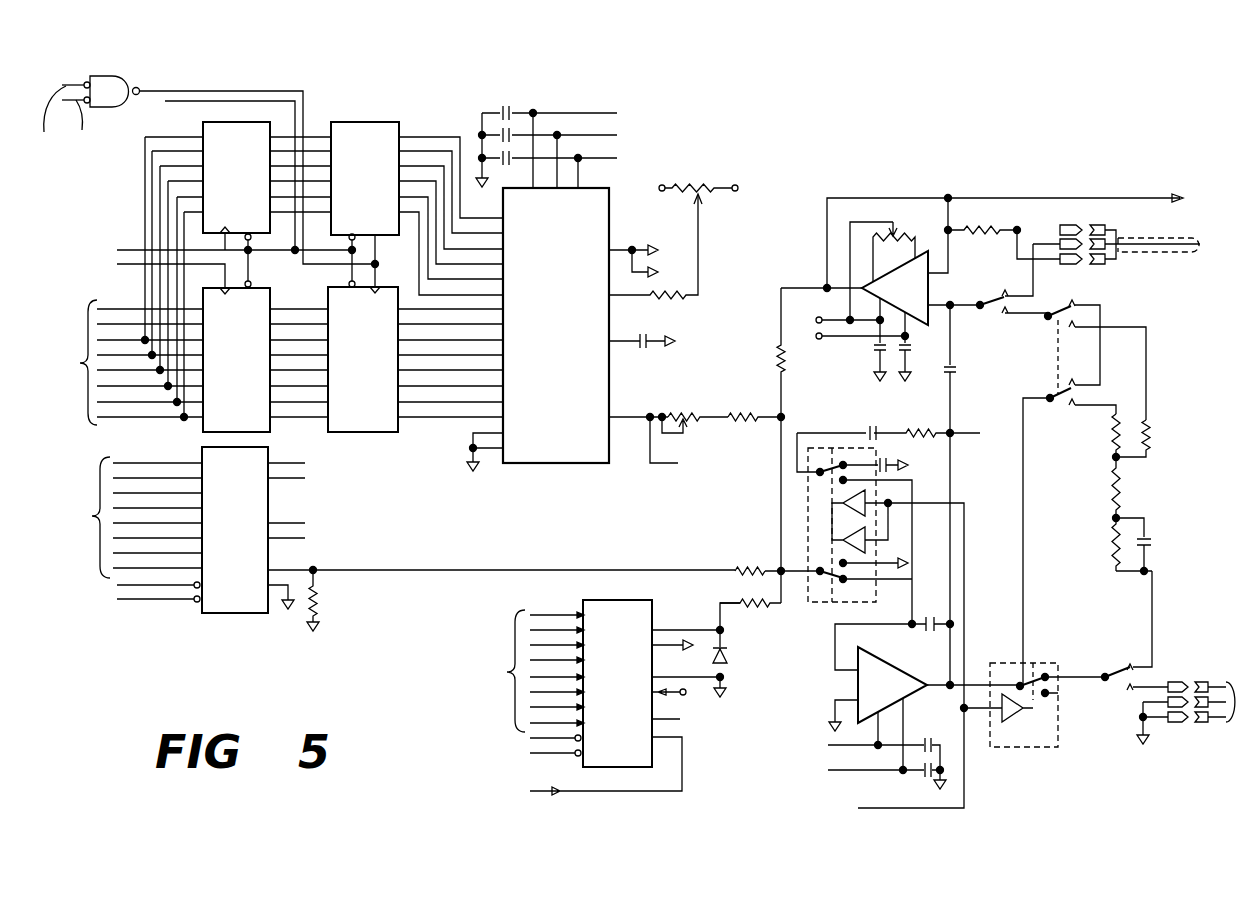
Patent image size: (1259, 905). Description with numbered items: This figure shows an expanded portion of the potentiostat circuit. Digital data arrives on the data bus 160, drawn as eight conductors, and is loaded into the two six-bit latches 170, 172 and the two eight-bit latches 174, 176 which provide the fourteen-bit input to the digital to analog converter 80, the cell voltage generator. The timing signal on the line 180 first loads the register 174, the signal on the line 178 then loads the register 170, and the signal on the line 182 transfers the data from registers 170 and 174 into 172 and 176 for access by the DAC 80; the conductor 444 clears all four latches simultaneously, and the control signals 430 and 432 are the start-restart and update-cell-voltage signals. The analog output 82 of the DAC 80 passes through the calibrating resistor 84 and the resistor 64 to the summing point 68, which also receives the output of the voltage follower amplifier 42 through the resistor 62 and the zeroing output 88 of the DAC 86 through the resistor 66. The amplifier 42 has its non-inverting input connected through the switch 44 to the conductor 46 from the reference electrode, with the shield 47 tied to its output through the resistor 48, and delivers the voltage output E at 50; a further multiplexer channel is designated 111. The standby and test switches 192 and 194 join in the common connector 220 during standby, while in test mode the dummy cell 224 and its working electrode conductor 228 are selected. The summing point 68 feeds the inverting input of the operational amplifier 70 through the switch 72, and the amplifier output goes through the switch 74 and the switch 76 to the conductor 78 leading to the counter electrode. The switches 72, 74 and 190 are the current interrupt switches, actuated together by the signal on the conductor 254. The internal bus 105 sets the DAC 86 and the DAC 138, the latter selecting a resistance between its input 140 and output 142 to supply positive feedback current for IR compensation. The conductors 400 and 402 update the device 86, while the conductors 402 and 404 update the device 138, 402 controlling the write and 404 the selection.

The line 182 is at (180, 101).
The conductor 444 is at (180, 102).
The ST+RST L signal 430 is at (63, 118).
The UPDATE L signal 432 is at (91, 125).
The 6-bit latch 170 is at (272, 126).
The 6-bit latch 172 is at (370, 122).
The line 178 is at (124, 250).
The line 180 is at (124, 264).
The data bus 160 is at (126, 281).
The 8-bit latch 174 is at (200, 430).
The 8-bit latch 176 is at (345, 434).
The digital to analog converter 80 is at (565, 464).
The analog voltage output 82 is at (656, 465).
The calibrating resistor 84 is at (678, 414).
The resistor 64 is at (746, 426).
The resistor 62 is at (786, 356).
The operational amplifier 42 is at (908, 254).
The resistor 48 is at (972, 236).
The voltage output E 50 is at (1006, 198).
The conductor 46 is at (1034, 272).
The shield 47 is at (1147, 257).
The switch 44 is at (1000, 312).
The switch 192 is at (1055, 312).
The common connector 220 is at (1100, 358).
The switch 194 is at (1050, 406).
The dummy cell 224 is at (1138, 490).
The working electrode conductor 228 is at (1152, 575).
The channel 111 is at (966, 436).
The switch 190 is at (826, 466).
The switch 72 is at (833, 582).
The summing point 68 is at (778, 566).
The resistor 66 is at (745, 601).
The analog voltage output 88 is at (440, 569).
The digital to analog converter 86 is at (244, 620).
The internal data bus 105 is at (320, 594).
The conductor 400 is at (118, 589).
The conductor 402 is at (150, 602).
The conductor 404 is at (530, 740).
The input 140 is at (533, 793).
The digital to analog converter 138 is at (616, 778).
The output 142 is at (702, 628).
The operational amplifier 70 is at (893, 665).
The switch 74 is at (1030, 674).
The switch 76 is at (1112, 690).
The conductor 78 is at (1156, 688).
The conductor 254 is at (880, 810).